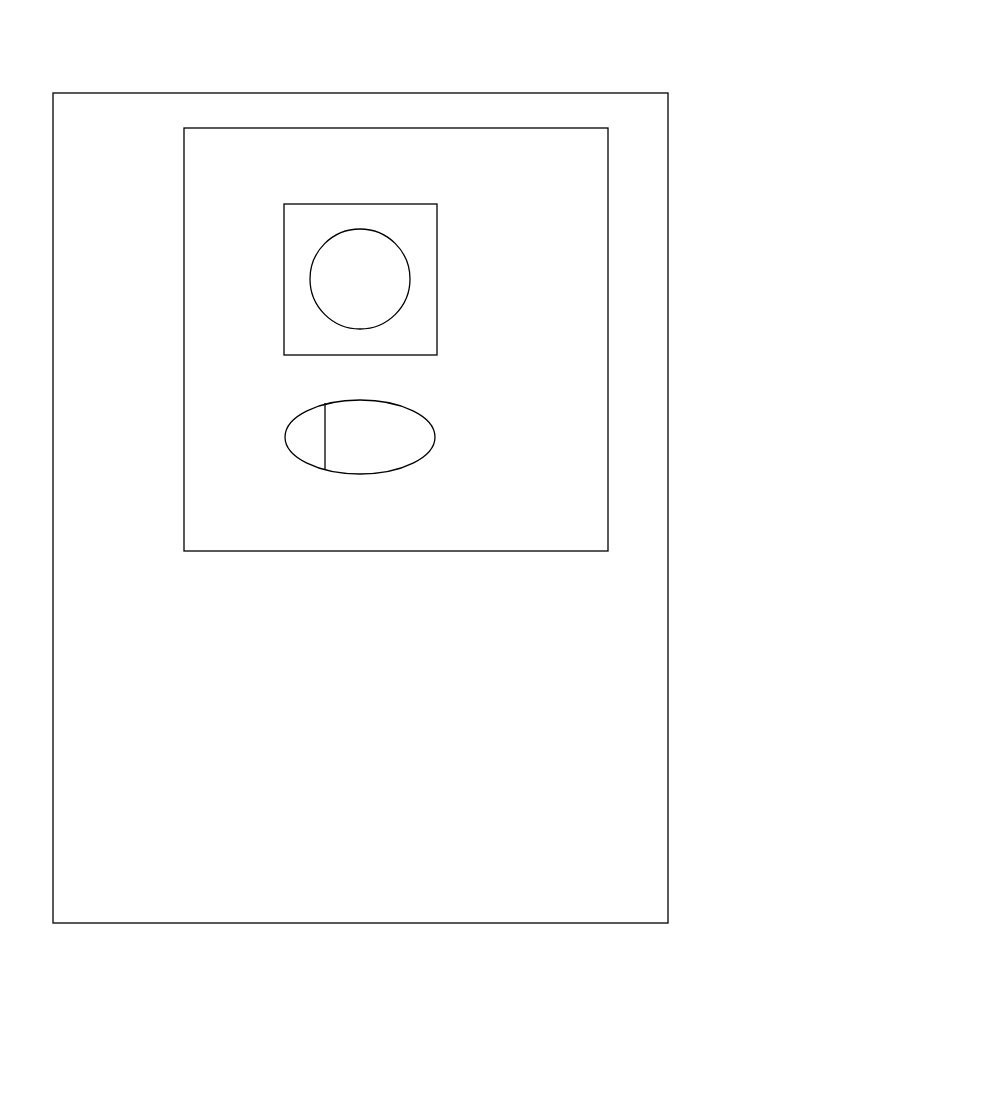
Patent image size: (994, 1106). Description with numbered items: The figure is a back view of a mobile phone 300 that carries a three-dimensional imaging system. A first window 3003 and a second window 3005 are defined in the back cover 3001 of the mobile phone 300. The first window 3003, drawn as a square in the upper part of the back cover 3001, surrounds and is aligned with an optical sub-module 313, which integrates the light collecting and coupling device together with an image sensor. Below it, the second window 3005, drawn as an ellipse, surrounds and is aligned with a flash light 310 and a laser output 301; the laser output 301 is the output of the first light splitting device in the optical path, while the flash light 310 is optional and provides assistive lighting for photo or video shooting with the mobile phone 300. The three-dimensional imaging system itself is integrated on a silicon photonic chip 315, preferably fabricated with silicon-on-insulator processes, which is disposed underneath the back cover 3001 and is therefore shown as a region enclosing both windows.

The mobile phone 300 is at (780, 72).
The back cover 3001 is at (598, 100).
The silicon photonic chip 315 is at (232, 547).
The first window 3003 is at (404, 208).
The optical sub-module 313 is at (407, 258).
The second window 3005 is at (414, 412).
The flash light 310 is at (295, 438).
The laser output 301 is at (355, 410).